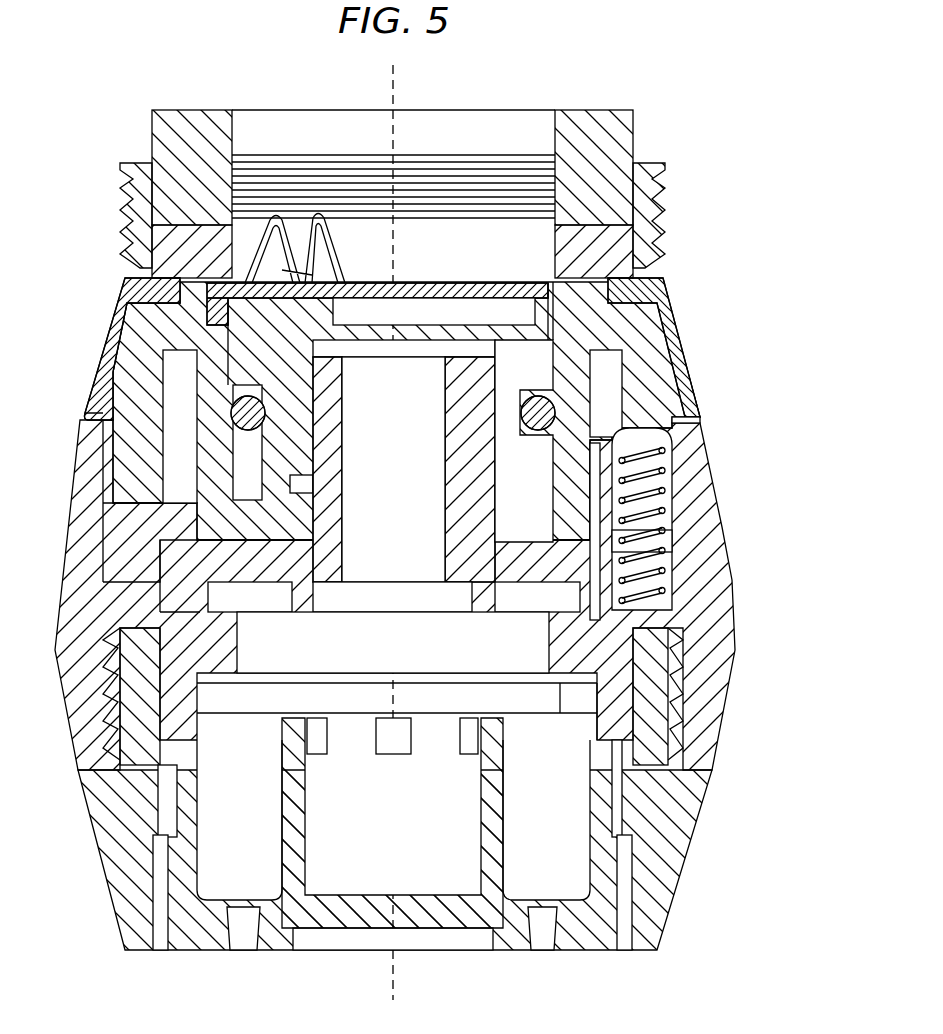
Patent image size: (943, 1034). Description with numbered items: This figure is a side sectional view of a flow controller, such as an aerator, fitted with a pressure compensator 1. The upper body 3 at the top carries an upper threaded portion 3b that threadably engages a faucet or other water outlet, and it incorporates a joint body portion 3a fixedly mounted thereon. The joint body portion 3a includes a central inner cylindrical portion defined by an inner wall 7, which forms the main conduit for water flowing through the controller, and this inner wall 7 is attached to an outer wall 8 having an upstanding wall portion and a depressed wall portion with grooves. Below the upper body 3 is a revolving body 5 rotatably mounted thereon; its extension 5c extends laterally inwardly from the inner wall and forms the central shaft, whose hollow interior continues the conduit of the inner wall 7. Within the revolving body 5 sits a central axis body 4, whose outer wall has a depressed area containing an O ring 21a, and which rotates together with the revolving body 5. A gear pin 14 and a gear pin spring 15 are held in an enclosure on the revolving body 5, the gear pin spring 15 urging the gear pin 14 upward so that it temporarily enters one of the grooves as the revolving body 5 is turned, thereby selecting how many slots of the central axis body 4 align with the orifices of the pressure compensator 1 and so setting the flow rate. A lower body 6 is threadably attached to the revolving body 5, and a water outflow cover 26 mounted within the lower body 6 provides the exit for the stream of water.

The pressure compensator 1 is at (490, 280).
The upper body 3 is at (686, 350).
The joint body portion 3a is at (127, 356).
The upper threaded portion 3b is at (123, 216).
The central axis body 4 is at (257, 462).
The revolving body 5 is at (83, 702).
The extension 5c is at (127, 603).
The lower body 6 is at (93, 863).
The inner wall 7 is at (577, 457).
The outer wall 8 is at (658, 390).
The gear pin 14 is at (668, 432).
The gear pin spring 15 is at (660, 550).
The O ring 21a is at (560, 417).
The water outflow cover 26 is at (572, 937).